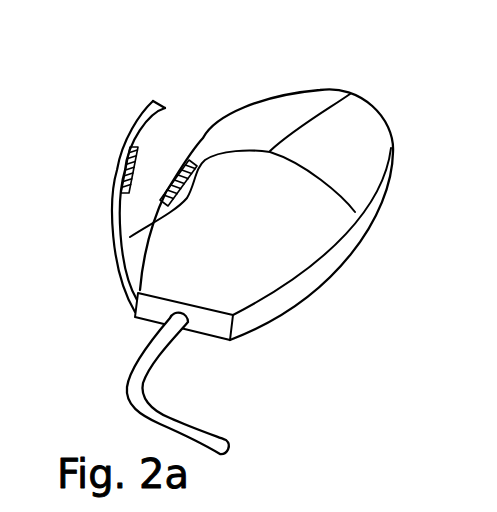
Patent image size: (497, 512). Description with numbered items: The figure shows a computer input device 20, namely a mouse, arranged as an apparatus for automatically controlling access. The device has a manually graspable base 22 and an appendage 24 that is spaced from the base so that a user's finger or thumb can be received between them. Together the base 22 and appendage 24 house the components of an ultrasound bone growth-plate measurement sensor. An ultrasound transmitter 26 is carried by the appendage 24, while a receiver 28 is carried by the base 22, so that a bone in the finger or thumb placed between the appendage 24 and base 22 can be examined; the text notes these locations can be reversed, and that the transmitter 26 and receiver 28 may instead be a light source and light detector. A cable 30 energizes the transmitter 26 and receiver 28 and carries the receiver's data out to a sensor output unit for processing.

The computer input device 20 is at (352, 93).
The manually graspable base 22 is at (321, 238).
The appendage 24 is at (166, 111).
The ultrasound transmitter 26 is at (117, 168).
The receiver 28 is at (130, 237).
The cable 30 is at (183, 425).